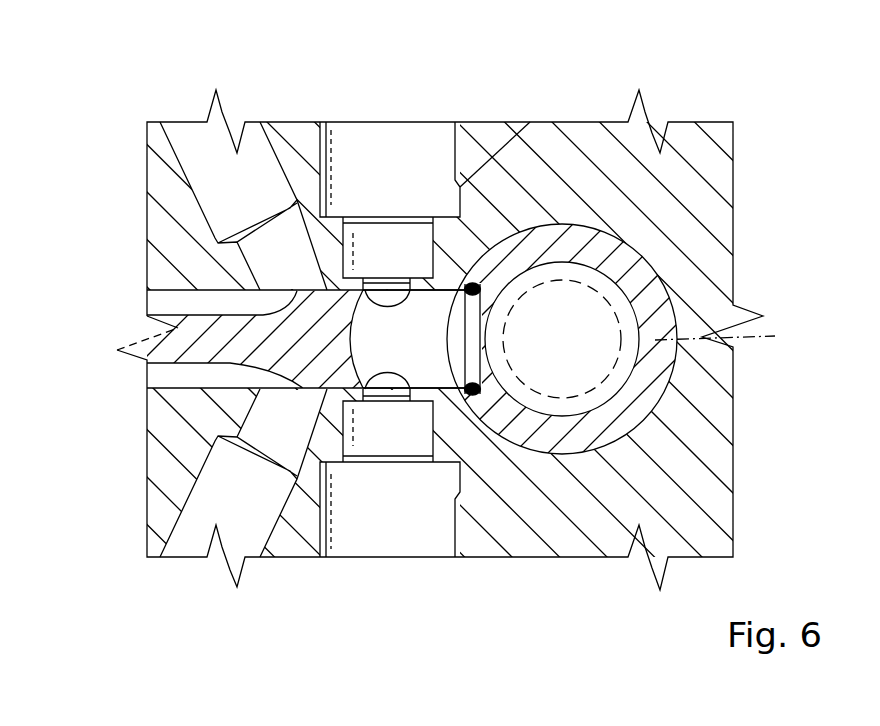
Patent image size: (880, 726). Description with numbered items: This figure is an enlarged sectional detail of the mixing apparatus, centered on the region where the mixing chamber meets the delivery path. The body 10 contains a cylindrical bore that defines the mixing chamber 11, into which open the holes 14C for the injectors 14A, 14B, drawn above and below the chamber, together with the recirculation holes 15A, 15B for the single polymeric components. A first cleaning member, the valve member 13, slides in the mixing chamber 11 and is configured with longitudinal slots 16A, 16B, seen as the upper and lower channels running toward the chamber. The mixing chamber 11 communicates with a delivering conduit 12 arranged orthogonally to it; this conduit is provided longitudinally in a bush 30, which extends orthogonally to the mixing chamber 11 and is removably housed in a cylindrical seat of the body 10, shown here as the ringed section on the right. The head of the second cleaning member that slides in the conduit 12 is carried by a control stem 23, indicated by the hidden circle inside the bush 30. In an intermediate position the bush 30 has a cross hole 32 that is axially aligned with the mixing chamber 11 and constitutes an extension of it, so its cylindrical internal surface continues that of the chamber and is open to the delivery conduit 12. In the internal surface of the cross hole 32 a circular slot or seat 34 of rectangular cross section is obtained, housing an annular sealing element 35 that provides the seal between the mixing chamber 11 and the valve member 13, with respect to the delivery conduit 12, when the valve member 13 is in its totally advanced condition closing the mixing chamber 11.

The body 10 is at (692, 147).
The mixing chamber 11 is at (421, 350).
The delivering conduit 12 is at (588, 307).
The valve member 13 is at (222, 392).
The injector 14A is at (387, 152).
The injector 14B is at (358, 528).
The holes for the injectors 14C is at (393, 297).
The recirculation hole 15A is at (192, 147).
The recirculation hole 15B is at (195, 530).
The longitudinal slot 16A is at (180, 302).
The longitudinal slot 16B is at (180, 373).
The control stem 23 is at (630, 312).
The bush 30 is at (650, 368).
The cross hole 32 is at (455, 339).
The circular slot or seat 34 is at (572, 372).
The annular sealing element 35 is at (474, 312).